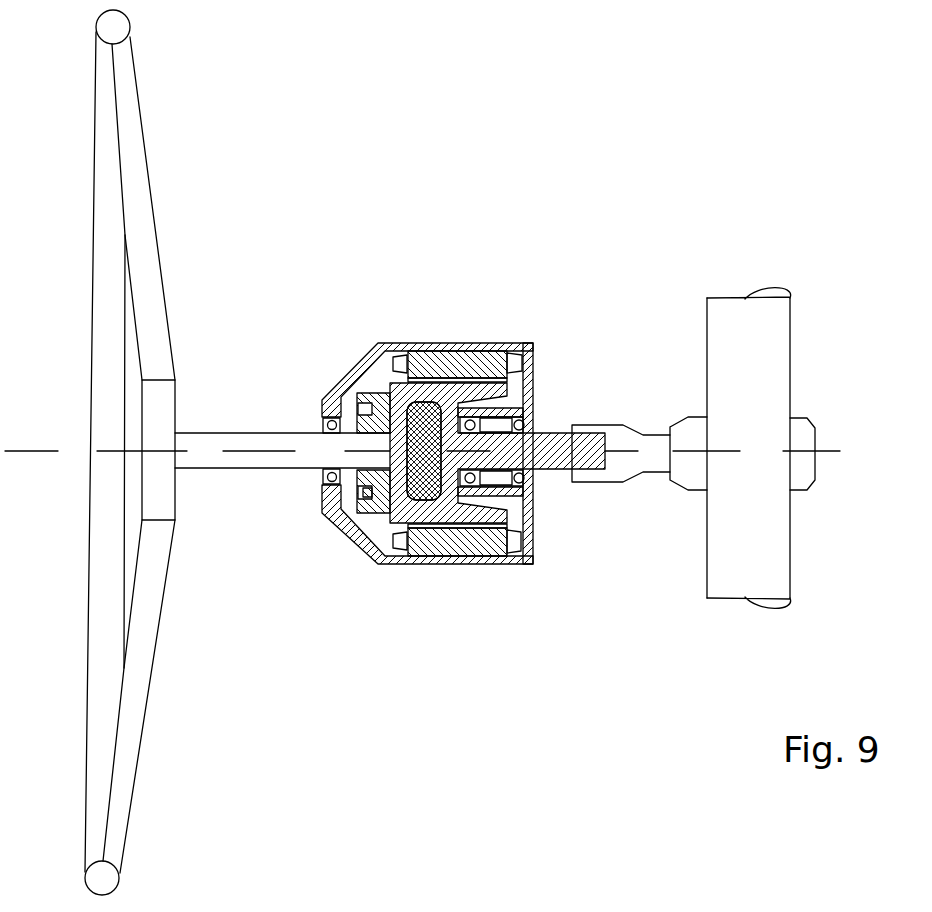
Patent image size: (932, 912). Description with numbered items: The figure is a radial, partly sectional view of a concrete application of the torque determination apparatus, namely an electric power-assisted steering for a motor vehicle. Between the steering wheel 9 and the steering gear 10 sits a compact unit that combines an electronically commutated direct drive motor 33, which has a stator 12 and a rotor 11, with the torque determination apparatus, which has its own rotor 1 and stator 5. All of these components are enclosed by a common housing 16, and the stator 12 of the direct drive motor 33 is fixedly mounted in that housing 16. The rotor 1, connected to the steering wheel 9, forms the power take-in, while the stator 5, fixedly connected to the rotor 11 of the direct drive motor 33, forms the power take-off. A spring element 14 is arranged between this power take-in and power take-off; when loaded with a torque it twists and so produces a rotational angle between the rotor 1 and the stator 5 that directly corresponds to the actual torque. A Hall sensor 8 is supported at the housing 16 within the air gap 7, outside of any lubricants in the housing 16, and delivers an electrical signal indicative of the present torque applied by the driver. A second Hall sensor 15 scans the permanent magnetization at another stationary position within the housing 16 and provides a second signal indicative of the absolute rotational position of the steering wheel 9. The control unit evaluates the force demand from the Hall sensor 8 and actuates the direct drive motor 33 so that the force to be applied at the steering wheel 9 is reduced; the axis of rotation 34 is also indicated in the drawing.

The rotor 1 is at (353, 483).
The stator 5 is at (370, 517).
The air gap 7 is at (352, 492).
The Hall sensor 8 is at (357, 412).
The steering wheel 9 is at (187, 402).
The steering gear 10 is at (705, 325).
The rotor 11 is at (510, 520).
The stator 12 is at (500, 545).
The spring element 14 is at (507, 623).
The second Hall sensor 15 is at (373, 383).
The housing 16 is at (585, 380).
The direct drive motor 33 is at (412, 567).
The axis of rotation 34 is at (858, 446).